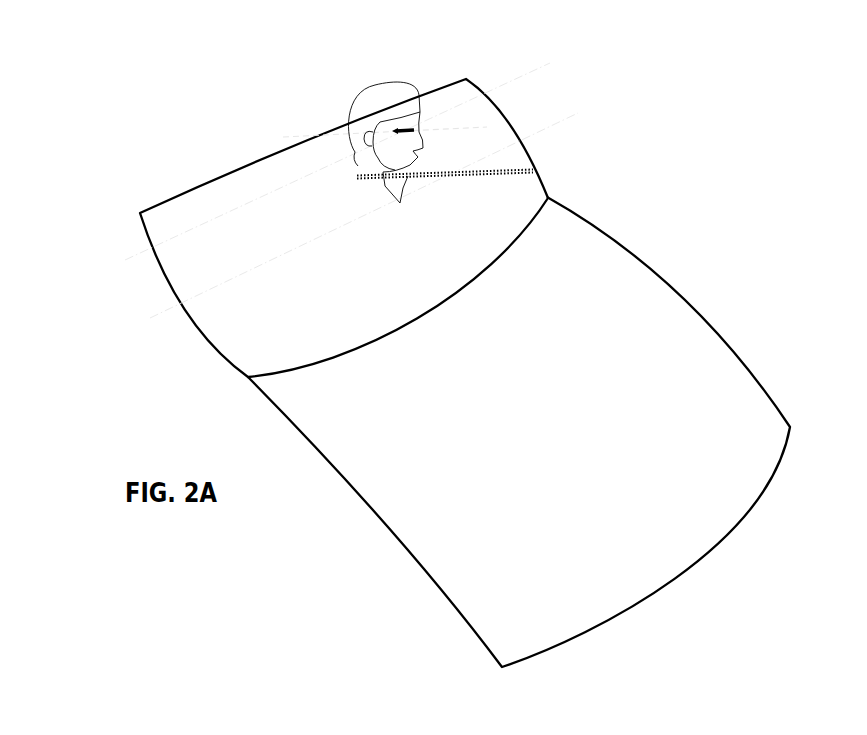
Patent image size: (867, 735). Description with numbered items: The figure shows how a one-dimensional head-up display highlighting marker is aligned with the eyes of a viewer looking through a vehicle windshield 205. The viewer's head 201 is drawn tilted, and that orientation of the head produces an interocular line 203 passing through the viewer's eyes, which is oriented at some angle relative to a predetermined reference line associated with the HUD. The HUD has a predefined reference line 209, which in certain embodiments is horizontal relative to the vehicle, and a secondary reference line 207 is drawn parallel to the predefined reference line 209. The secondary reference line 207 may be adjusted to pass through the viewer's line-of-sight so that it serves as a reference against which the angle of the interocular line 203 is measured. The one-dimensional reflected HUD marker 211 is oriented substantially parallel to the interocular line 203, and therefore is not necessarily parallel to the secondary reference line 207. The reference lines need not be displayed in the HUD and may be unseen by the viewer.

The viewer's head 201 is at (372, 86).
The interocular line 203 is at (297, 135).
The windshield 205 is at (165, 203).
The secondary reference line 207 is at (140, 252).
The predefined reference line 209 is at (157, 313).
The one-dimensional reflected HUD marker 211 is at (480, 173).